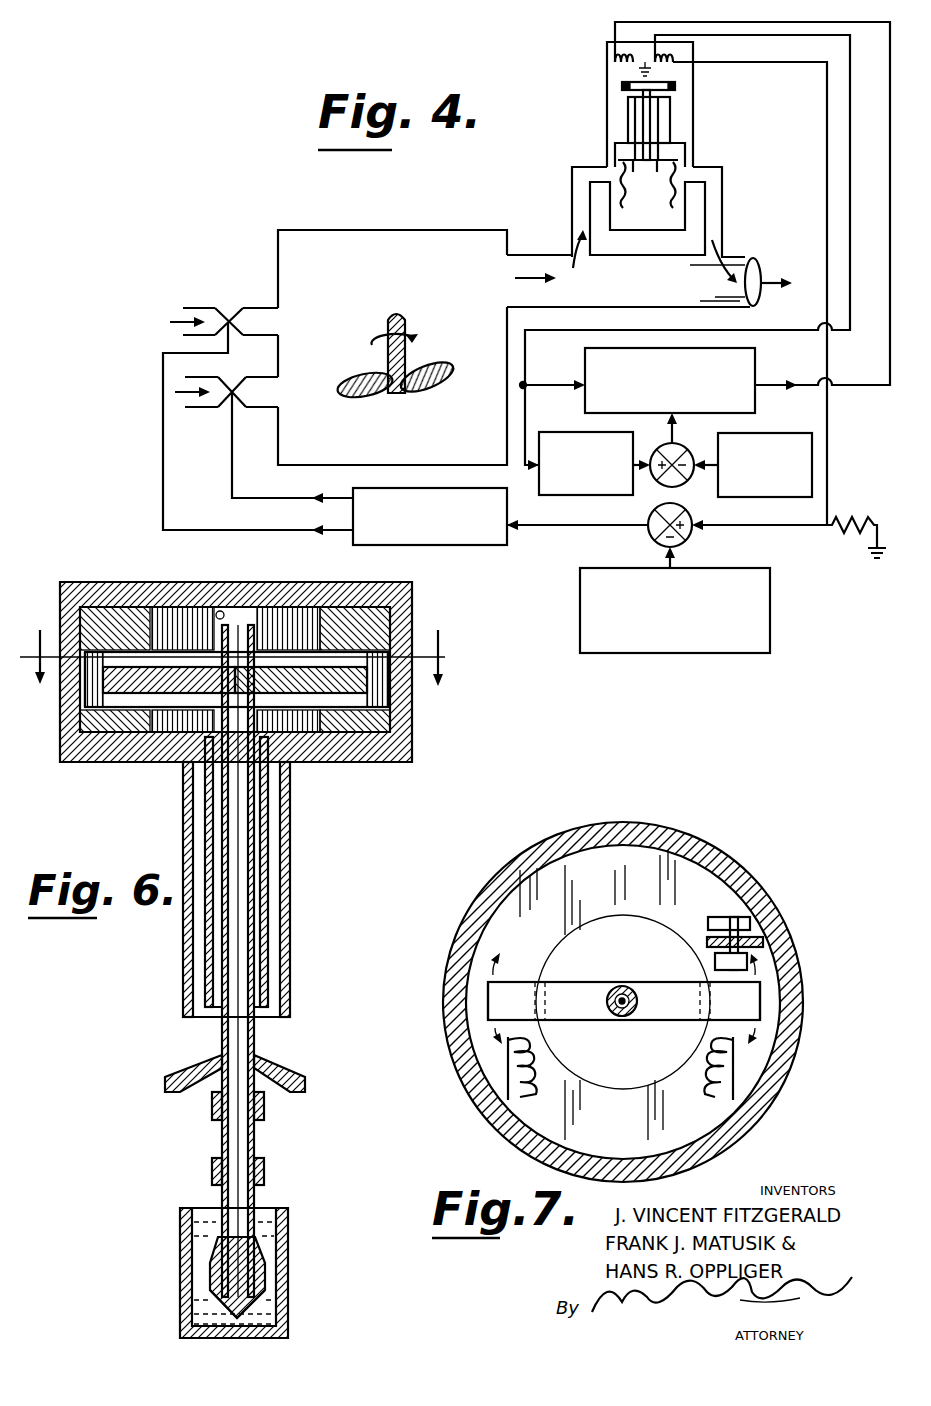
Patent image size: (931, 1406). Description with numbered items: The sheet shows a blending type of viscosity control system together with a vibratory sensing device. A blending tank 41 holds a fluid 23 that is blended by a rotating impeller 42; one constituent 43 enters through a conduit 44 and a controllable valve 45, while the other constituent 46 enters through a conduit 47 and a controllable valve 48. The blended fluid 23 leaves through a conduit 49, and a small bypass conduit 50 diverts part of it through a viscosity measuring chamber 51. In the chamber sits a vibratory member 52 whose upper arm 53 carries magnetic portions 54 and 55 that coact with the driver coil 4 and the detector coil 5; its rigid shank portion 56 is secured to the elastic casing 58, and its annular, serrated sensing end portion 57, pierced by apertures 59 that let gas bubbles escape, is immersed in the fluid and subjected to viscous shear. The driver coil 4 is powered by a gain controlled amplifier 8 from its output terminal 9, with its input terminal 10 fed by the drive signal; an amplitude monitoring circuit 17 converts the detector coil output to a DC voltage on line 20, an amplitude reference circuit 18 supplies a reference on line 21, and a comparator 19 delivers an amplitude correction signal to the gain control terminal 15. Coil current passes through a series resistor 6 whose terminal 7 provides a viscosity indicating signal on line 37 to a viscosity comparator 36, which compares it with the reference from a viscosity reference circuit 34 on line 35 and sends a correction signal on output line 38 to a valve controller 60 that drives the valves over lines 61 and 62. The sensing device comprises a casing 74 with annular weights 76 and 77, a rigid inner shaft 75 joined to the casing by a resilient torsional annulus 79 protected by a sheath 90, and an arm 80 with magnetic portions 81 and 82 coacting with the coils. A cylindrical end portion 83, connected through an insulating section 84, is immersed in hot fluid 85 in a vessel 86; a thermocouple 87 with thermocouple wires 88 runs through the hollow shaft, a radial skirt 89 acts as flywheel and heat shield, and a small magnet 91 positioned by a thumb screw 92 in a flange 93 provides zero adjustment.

In FIG. 4, the magnetic coil driver 4 is at (612, 60).
In FIG. 7, the magnetic coil driver 4 is at (705, 1070).
In FIG. 4, the detector coil 5 is at (673, 60).
In FIG. 7, the detector coil 5 is at (530, 1073).
In FIG. 4, the series resistor 6 is at (850, 520).
In FIG. 4, the terminal 7 is at (827, 520).
In FIG. 6, the terminal 7 is at (232, 671).
In FIG. 4, the gain controlled amplifier 8 is at (757, 350).
In FIG. 4, the output terminal 9 is at (755, 388).
In FIG. 4, the input terminal 10 is at (575, 388).
In FIG. 4, the gain control terminal 15 is at (675, 430).
In FIG. 4, the precision amplitude monitoring circuit 17 is at (565, 496).
In FIG. 4, the amplitude reference circuit 18 is at (812, 497).
In FIG. 4, the comparator 19 is at (665, 447).
In FIG. 4, the line 20 is at (640, 475).
In FIG. 4, the line 21 is at (702, 470).
In FIG. 4, the fluid 23 is at (410, 290).
In FIG. 4, the viscosity reference circuit 34 is at (765, 570).
In FIG. 4, the line 35 is at (680, 545).
In FIG. 4, the viscosity comparator 36 is at (648, 530).
In FIG. 4, the line 37 is at (705, 522).
In FIG. 4, the output line 38 is at (545, 527).
In FIG. 4, the blending tank 41 is at (330, 240).
In FIG. 4, the rotating impeller 42 is at (435, 355).
In FIG. 4, the constituent 43 is at (315, 310).
In FIG. 4, the conduit 44 is at (215, 308).
In FIG. 4, the controllable valve 45 is at (228, 318).
In FIG. 4, the constituent 46 is at (320, 380).
In FIG. 4, the conduit 47 is at (218, 405).
In FIG. 4, the controllable valve 48 is at (238, 400).
In FIG. 4, the conduit 49 is at (615, 295).
In FIG. 4, the bypass conduit 50 is at (572, 205).
In FIG. 4, the viscosity measuring chamber 51 is at (620, 152).
In FIG. 4, the vibratory member 52 is at (628, 112).
In FIG. 4, the upper arm 53 is at (650, 92).
In FIG. 4, the magnetic portion 54 is at (622, 86).
In FIG. 4, the magnetic portion 55 is at (675, 86).
In FIG. 4, the shank portion 56 is at (660, 125).
In FIG. 4, the sensing end portion 57 is at (680, 185).
In FIG. 4, the elastic casing 58 is at (620, 128).
In FIG. 4, the apertures 59 is at (647, 218).
In FIG. 4, the valve controller 60 is at (505, 545).
In FIG. 4, the line 61 is at (275, 530).
In FIG. 4, the line 62 is at (300, 498).
In FIG. 6, the casing 74 is at (405, 600).
In FIG. 7, the casing 74 is at (800, 1035).
In FIG. 6, the inner shaft 75 is at (228, 620).
In FIG. 7, the inner shaft 75 is at (628, 985).
In FIG. 6, the annular weight 76 is at (115, 620).
In FIG. 6, the annular weight 77 is at (110, 725).
In FIG. 6, the torsional annulus 79 is at (268, 842).
In FIG. 6, the arm 80 is at (197, 685).
In FIG. 7, the arm 80 is at (578, 1022).
In FIG. 6, the magnetic portion 81 is at (358, 690).
In FIG. 7, the magnetic portion 81 is at (760, 1000).
In FIG. 6, the magnetic portion 82 is at (100, 688).
In FIG. 7, the magnetic portion 82 is at (488, 1000).
In FIG. 6, the cylindrical end portion 83 is at (218, 1260).
In FIG. 6, the insulating section 84 is at (222, 1138).
In FIG. 6, the hot fluid 85 is at (205, 1303).
In FIG. 6, the vessel 86 is at (278, 1210).
In FIG. 6, the thermocouple 87 is at (225, 1290).
In FIG. 6, the thermocouple wires 88 is at (215, 612).
In FIG. 6, the radial skirt 89 is at (285, 1080).
In FIG. 6, the sheath 90 is at (290, 790).
In FIG. 7, the small magnet 91 is at (750, 960).
In FIG. 7, the thumb screw 92 is at (737, 915).
In FIG. 7, the flange 93 is at (760, 935).